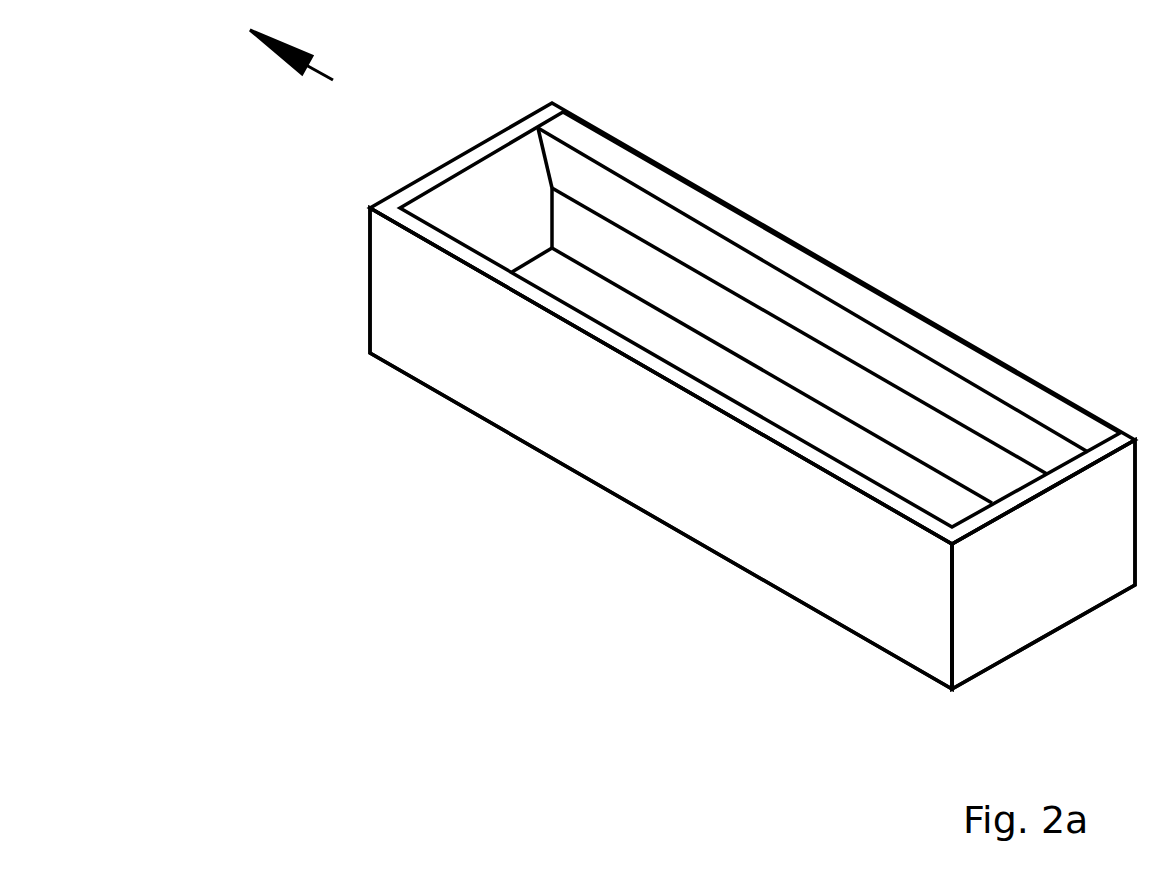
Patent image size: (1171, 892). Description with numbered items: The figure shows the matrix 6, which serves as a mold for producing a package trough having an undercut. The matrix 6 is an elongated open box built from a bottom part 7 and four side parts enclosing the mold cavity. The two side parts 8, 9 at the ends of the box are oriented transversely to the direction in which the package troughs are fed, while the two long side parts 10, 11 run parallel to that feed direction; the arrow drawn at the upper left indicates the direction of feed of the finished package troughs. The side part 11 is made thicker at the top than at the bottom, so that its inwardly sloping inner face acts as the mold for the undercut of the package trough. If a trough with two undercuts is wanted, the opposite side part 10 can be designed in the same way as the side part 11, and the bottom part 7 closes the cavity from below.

The matrix 6 is at (622, 590).
The bottom part 7 is at (852, 442).
The side part 8 is at (448, 170).
The side part 9 is at (1045, 570).
The side part 10 is at (642, 448).
The side part 11 is at (733, 228).